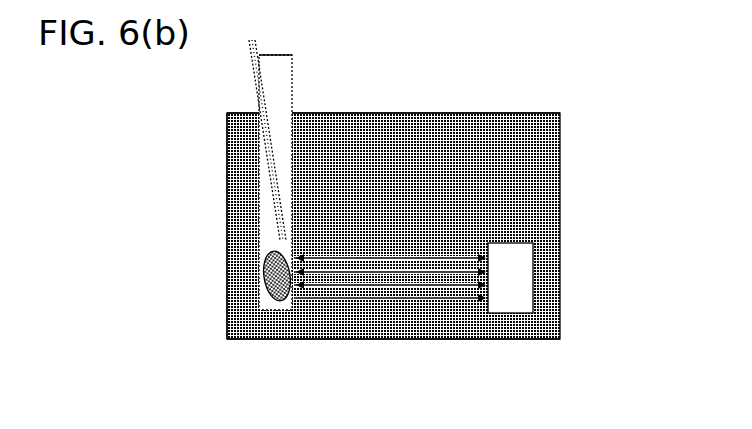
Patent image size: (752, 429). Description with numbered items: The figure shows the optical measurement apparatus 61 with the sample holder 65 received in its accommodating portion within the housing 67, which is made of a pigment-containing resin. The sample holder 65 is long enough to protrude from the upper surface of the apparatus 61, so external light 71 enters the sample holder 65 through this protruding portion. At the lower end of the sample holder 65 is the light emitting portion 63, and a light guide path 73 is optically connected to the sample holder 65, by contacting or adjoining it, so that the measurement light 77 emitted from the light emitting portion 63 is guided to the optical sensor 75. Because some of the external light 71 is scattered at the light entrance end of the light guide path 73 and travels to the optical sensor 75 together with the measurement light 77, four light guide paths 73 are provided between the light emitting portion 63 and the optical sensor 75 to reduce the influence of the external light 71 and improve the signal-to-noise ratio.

The optical measurement apparatus 61 is at (448, 103).
The light emitting portion 63 is at (260, 270).
The sample holder 65 is at (270, 90).
The housing 67 is at (530, 113).
The external light 71 is at (227, 178).
The light guide path 73 is at (413, 340).
The optical sensor 75 is at (523, 289).
The measurement light 77 is at (295, 339).